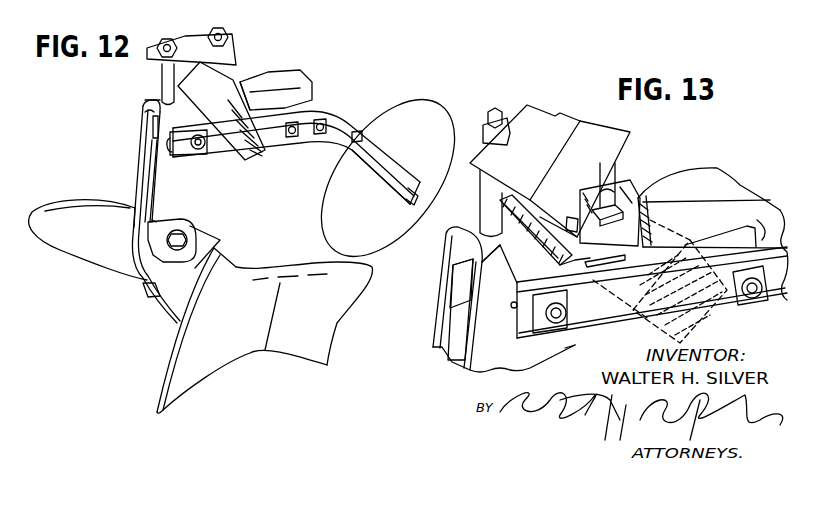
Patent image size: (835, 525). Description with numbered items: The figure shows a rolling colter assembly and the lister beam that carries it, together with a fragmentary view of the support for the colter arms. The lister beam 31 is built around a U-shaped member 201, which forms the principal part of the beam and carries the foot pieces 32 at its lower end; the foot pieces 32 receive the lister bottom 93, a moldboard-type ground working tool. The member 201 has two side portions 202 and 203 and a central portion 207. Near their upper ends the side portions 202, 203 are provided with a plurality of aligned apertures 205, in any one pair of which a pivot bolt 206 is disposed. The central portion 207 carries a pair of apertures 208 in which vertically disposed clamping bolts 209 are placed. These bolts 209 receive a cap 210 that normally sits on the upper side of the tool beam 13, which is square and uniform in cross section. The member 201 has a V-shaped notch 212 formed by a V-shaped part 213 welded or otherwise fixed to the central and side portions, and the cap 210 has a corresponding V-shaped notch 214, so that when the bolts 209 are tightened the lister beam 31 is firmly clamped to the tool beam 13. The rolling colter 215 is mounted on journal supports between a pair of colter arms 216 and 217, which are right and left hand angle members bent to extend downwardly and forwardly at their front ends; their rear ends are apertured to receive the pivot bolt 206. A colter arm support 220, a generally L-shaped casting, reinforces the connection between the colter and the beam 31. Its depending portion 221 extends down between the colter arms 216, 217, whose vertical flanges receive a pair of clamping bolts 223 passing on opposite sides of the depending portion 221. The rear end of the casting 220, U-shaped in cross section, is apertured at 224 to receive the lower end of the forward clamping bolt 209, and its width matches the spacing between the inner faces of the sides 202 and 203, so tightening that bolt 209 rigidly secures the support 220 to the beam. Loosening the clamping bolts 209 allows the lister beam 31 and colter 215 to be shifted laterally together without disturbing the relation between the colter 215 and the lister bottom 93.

In FIG. 12, the tool beam 13 is at (215, 92).
In FIG. 13, the tool beam 13 is at (718, 300).
In FIG. 12, the lister beam 31 is at (206, 200).
In FIG. 12, the foot pieces 32 is at (150, 285).
In FIG. 12, the lister bottom 93 is at (257, 275).
In FIG. 12, the U-shaped member 201 is at (133, 146).
In FIG. 13, the U-shaped member 201 is at (430, 321).
In FIG. 12, the side portion 202 is at (138, 173).
In FIG. 13, the side portion 202 is at (448, 285).
In FIG. 12, the side portion 203 is at (203, 177).
In FIG. 13, the side portion 203 is at (565, 348).
In FIG. 12, the aligned apertures 205 is at (172, 135).
In FIG. 13, the aligned apertures 205 is at (513, 309).
In FIG. 12, the pivot bolt 206 is at (160, 123).
In FIG. 13, the pivot bolt 206 is at (545, 300).
In FIG. 12, the central portion 207 is at (156, 103).
In FIG. 13, the central portion 207 is at (467, 233).
In FIG. 13, the apertures 208 is at (485, 223).
In FIG. 12, the clamping bolts 209 is at (218, 28).
In FIG. 13, the clamping bolts 209 is at (495, 112).
In FIG. 12, the cap 210 is at (222, 57).
In FIG. 13, the cap 210 is at (556, 115).
In FIG. 13, the V-shaped notch 212 is at (560, 190).
In FIG. 13, the V-shaped part 213 is at (575, 268).
In FIG. 12, the V-shaped notch 214 is at (160, 76).
In FIG. 12, the rolling colter 215 is at (402, 115).
In FIG. 12, the colter arm 216 is at (313, 103).
In FIG. 12, the colter arm 217 is at (340, 123).
In FIG. 13, the colter arm 217 is at (723, 257).
In FIG. 12, the colter arm support 220 is at (272, 76).
In FIG. 13, the colter arm support 220 is at (703, 170).
In FIG. 13, the depending portion 221 is at (760, 230).
In FIG. 12, the clamping bolts 223 is at (320, 134).
In FIG. 13, the clamping bolts 223 is at (752, 302).
In FIG. 13, the aperture 224 is at (633, 210).